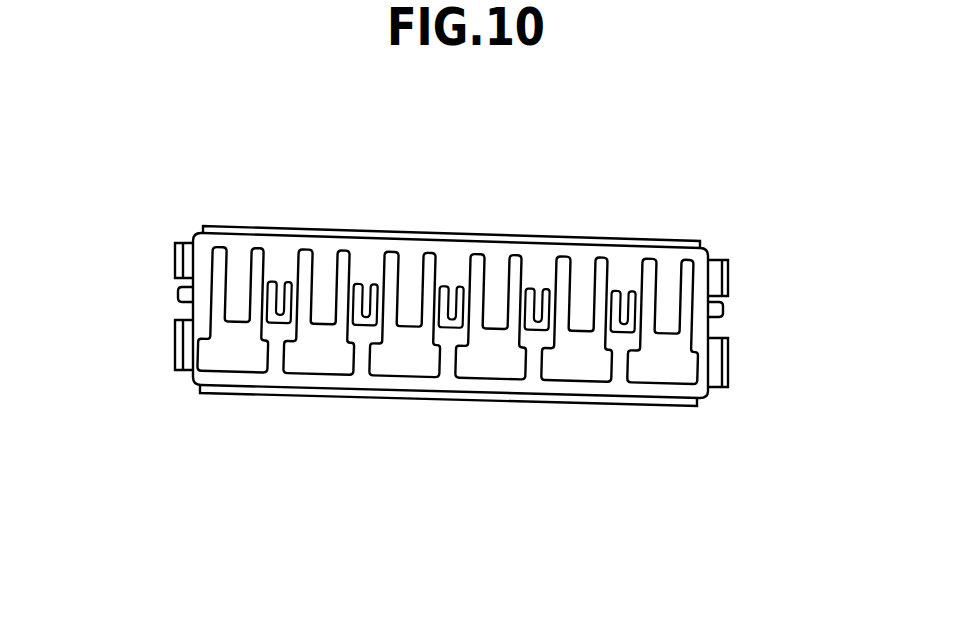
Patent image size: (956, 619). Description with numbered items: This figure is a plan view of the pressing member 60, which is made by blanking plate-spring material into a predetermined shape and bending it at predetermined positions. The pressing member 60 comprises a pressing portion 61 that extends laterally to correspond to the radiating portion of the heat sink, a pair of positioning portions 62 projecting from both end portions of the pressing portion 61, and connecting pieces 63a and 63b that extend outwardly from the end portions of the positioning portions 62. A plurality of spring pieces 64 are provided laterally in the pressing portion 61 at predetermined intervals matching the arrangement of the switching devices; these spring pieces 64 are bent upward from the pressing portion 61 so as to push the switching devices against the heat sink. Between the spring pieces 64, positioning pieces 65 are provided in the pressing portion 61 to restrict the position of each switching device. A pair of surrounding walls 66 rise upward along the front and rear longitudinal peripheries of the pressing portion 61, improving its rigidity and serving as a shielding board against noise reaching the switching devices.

The pressing member 60 is at (715, 202).
The pressing portion 61 is at (452, 253).
The positioning portion 62 is at (177, 286).
The connecting piece 63a is at (176, 355).
The connecting piece 63b is at (176, 254).
The spring piece 64 is at (410, 312).
The positioning piece 65 is at (362, 292).
The surrounding wall 66 is at (224, 226).